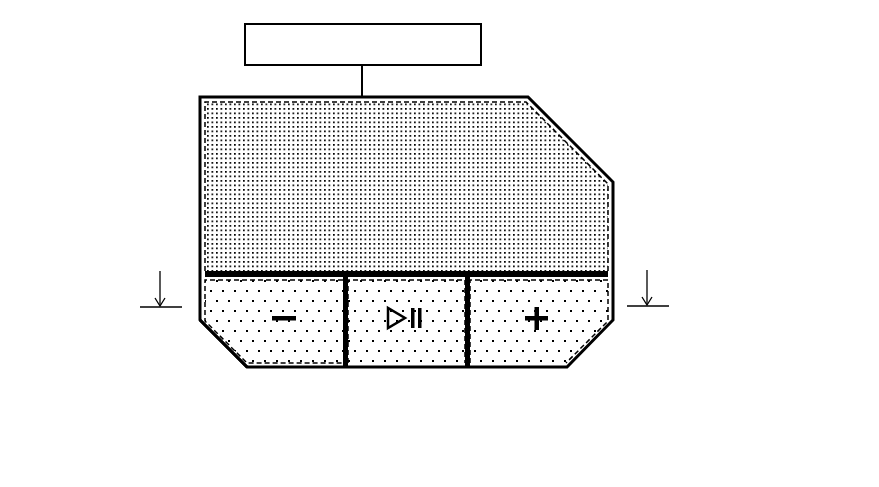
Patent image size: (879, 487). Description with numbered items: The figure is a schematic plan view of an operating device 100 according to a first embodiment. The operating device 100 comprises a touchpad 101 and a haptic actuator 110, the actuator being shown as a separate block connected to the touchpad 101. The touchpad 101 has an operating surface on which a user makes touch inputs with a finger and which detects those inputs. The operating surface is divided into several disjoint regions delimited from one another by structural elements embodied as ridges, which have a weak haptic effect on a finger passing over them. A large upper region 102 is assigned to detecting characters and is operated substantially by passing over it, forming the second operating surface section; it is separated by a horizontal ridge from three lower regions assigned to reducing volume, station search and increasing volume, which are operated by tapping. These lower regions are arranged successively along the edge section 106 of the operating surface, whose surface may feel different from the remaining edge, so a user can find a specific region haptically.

The operating device 100 is at (107, 87).
The touchpad 101 is at (200, 140).
The region 102 is at (572, 177).
The edge section 106 is at (215, 345).
The haptic actuator 110 is at (476, 44).